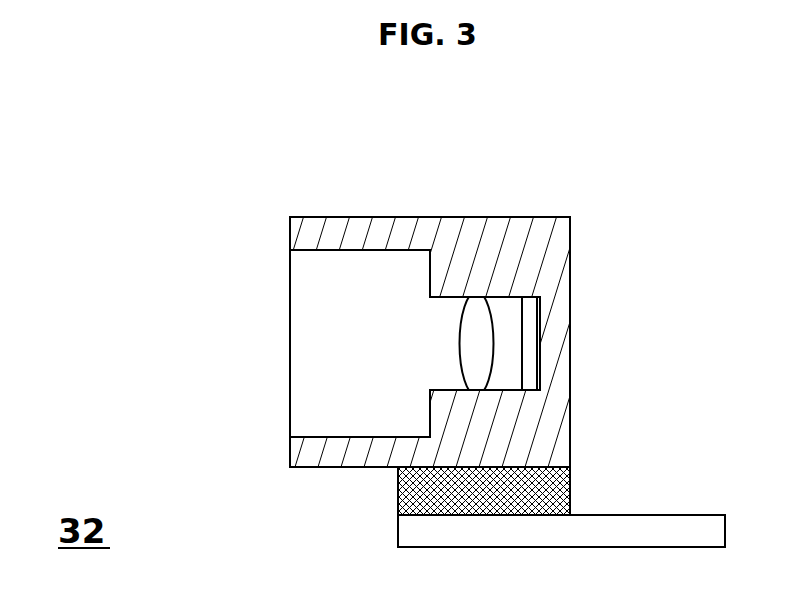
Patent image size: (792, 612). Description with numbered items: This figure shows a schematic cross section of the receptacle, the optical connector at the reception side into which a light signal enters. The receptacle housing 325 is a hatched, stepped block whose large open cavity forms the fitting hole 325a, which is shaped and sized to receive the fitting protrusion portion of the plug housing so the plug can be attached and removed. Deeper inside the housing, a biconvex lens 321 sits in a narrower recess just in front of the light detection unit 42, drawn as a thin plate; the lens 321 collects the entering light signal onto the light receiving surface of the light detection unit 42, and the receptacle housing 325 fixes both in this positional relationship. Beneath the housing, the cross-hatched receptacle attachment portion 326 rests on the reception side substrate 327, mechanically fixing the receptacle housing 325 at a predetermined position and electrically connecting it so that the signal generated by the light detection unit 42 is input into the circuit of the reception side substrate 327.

The receptacle housing 325 is at (353, 202).
The fitting hole 325a is at (307, 265).
The lens 321 is at (490, 313).
The light detection unit 42 is at (530, 343).
The receptacle attachment portion 326 is at (397, 487).
The reception side substrate 327 is at (650, 513).